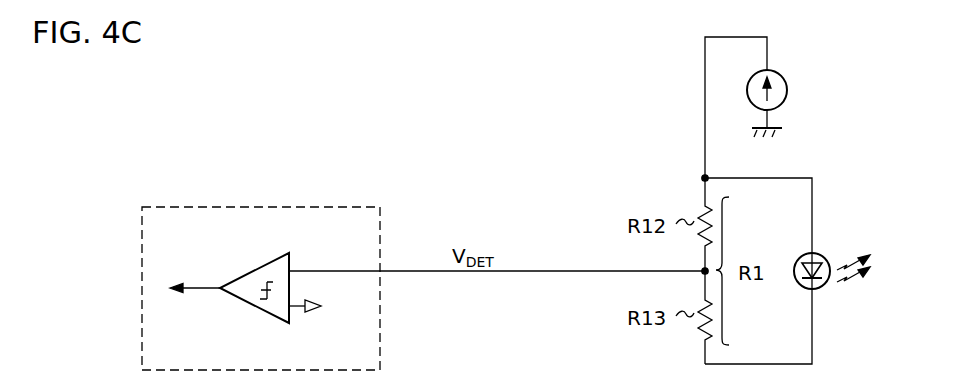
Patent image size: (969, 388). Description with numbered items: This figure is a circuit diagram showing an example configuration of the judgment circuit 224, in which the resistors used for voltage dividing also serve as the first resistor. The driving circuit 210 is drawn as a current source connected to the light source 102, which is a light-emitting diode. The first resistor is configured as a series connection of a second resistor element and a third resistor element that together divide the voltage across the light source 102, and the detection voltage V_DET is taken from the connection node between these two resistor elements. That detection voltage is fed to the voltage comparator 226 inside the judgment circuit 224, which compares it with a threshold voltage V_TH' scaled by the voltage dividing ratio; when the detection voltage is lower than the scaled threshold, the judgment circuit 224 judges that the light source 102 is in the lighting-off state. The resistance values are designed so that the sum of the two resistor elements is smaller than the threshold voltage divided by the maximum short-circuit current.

The judgment circuit 224 is at (285, 207).
The voltage comparator 226 is at (262, 310).
The driving circuit 210 is at (788, 87).
The light source 102 is at (820, 254).